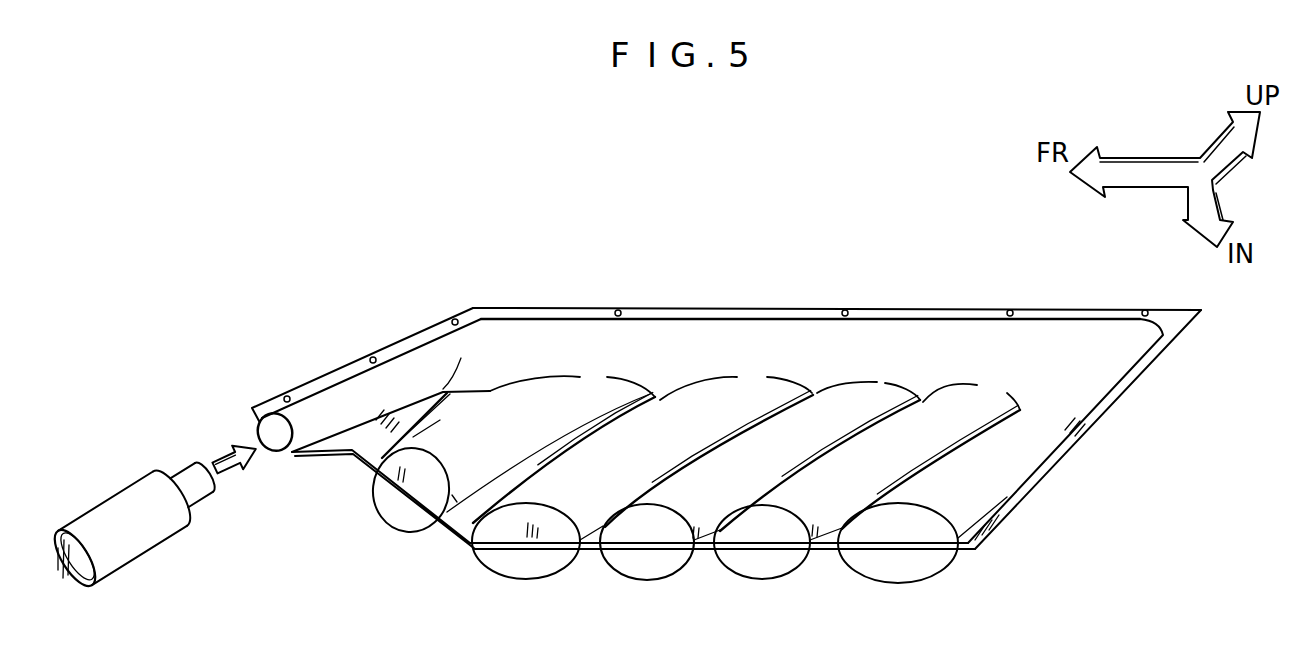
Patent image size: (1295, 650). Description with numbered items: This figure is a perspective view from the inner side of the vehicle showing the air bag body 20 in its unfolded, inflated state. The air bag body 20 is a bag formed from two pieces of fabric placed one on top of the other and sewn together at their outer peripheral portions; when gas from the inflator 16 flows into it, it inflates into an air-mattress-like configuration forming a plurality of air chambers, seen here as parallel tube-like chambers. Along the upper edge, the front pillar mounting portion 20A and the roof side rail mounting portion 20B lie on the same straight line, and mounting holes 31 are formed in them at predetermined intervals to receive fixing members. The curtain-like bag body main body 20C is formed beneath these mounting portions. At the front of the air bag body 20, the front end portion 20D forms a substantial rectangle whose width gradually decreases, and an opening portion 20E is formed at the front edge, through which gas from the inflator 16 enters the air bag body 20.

The inflator 16 is at (167, 540).
The air bag body 20 is at (887, 297).
The front pillar mounting portion 20A is at (403, 347).
The roof side rail mounting portion 20B is at (760, 314).
The bag body main body 20C is at (993, 470).
The front end portion 20D is at (401, 496).
The opening portion 20E is at (283, 440).
The mounting holes 31 is at (371, 357).